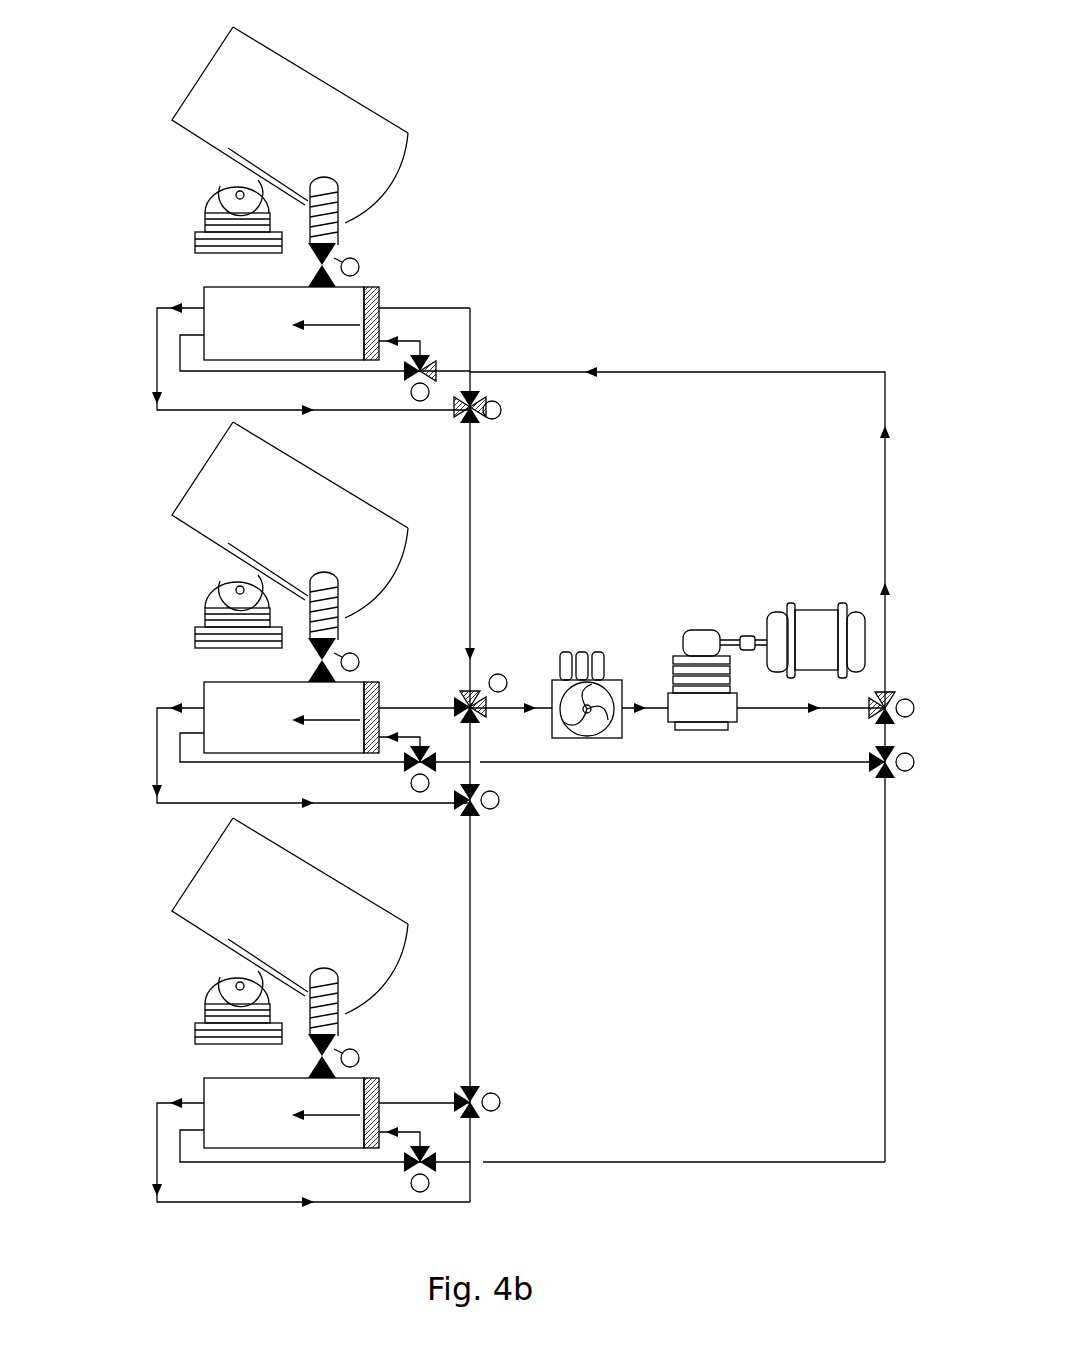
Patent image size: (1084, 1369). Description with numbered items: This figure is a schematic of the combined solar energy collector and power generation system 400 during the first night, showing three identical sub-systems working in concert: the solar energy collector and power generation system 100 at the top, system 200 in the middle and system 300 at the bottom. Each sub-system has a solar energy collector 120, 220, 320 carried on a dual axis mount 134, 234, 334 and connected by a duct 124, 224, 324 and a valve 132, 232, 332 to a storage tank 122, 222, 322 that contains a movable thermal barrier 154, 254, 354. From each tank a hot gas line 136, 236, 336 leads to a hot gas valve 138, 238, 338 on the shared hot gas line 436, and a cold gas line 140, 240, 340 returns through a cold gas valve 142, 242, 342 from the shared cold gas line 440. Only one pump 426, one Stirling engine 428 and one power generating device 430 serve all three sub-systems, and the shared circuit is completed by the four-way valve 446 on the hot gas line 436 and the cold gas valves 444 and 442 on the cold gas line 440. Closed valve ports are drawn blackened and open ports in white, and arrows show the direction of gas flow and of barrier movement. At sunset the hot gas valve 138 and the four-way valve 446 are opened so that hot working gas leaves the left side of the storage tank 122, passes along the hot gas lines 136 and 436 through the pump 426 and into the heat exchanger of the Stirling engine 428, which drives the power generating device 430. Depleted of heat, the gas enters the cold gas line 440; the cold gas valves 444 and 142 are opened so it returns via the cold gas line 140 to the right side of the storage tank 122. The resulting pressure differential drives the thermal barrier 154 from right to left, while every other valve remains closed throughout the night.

The solar energy collector and power generation system 100 is at (136, 79).
The solar energy collector 120 is at (198, 162).
The dual axis mount 134 is at (187, 233).
The duct 124 is at (303, 232).
The valve 132 is at (338, 248).
The thermal barrier 154 is at (368, 283).
The storage tank 122 is at (203, 298).
The hot gas line 136 is at (457, 300).
The cold gas line 140 is at (403, 325).
The cold gas valve 142 is at (405, 385).
The hot gas valve 138 is at (485, 425).
The solar energy collector and power generation system 200 is at (144, 456).
The solar energy collector 220 is at (198, 557).
The dual axis mount 234 is at (187, 628).
The duct 224 is at (303, 627).
The valve 232 is at (338, 643).
The thermal barrier 254 is at (368, 678).
The storage tank 222 is at (203, 693).
The hot gas line 236 is at (388, 700).
The cold gas line 240 is at (390, 732).
The cold gas valve 242 is at (400, 775).
The hot gas valve 238 is at (483, 818).
The solar energy collector and power generation system 300 is at (136, 847).
The solar energy collector 320 is at (198, 948).
The dual axis mount 334 is at (187, 1017).
The duct 324 is at (303, 1023).
The valve 332 is at (338, 1038).
The thermal barrier 354 is at (368, 1075).
The storage tank 322 is at (202, 1090).
The hot gas line 336 is at (388, 1098).
The cold gas line 340 is at (388, 1132).
The cold gas valve 342 is at (402, 1175).
The hot gas valve 338 is at (483, 1122).
The solar energy collector and power generation system 400 is at (754, 280).
The hot gas line 436 is at (480, 538).
The 4-way valve 446 is at (478, 676).
The pump 426 is at (585, 635).
The Stirling engine 428 is at (695, 620).
The power generating device 430 is at (808, 600).
The cold gas line 440 is at (725, 382).
The cold gas valve 444 is at (895, 697).
The cold gas valve 442 is at (897, 780).